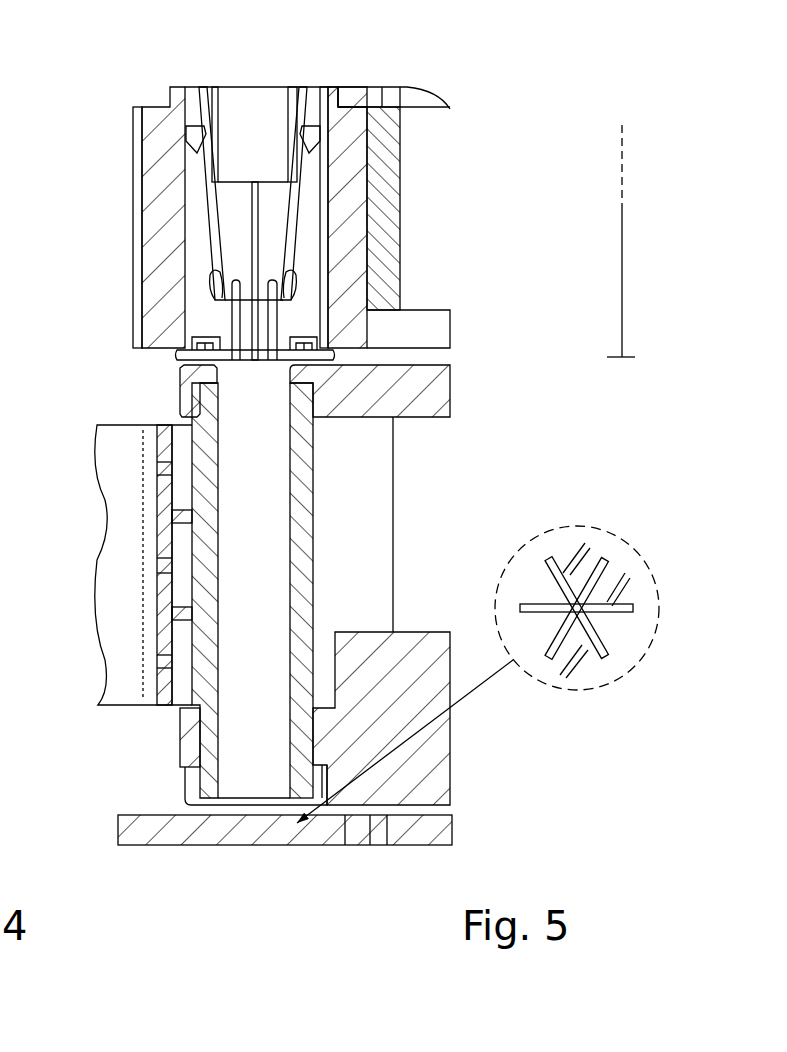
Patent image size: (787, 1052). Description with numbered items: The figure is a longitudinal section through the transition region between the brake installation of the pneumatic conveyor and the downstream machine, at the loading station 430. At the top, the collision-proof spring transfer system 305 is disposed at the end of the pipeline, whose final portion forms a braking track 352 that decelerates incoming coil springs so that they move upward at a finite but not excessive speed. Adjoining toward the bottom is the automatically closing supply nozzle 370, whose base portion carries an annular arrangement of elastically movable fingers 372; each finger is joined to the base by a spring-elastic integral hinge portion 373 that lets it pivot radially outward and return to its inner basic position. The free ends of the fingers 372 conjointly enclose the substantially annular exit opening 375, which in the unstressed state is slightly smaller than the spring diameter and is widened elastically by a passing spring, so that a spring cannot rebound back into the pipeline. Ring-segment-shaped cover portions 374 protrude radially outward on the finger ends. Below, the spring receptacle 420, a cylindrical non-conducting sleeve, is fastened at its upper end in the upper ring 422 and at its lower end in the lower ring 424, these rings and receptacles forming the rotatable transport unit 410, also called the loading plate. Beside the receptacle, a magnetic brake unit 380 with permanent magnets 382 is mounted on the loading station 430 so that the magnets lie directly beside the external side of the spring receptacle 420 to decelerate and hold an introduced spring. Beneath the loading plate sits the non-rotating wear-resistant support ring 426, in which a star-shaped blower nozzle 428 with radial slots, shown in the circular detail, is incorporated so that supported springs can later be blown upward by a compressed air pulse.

The spring transfer system 305 is at (112, 142).
The integral hinge portion 373 is at (305, 133).
The fingers 372 is at (302, 213).
The supply nozzle 370 is at (307, 278).
The exit opening 375 is at (247, 347).
The cover portions 374 is at (180, 352).
The braking track 352 is at (622, 182).
The upper ring 422 is at (425, 395).
The transport unit 410 is at (472, 478).
The spring receptacle 420 is at (302, 520).
The magnetic brake unit 380 is at (67, 540).
The magnet 382 is at (183, 648).
The lower ring 424 is at (425, 755).
The support ring 426 is at (630, 633).
The star-shaped blower nozzle 428 is at (600, 575).
The loading station 430 is at (243, 772).